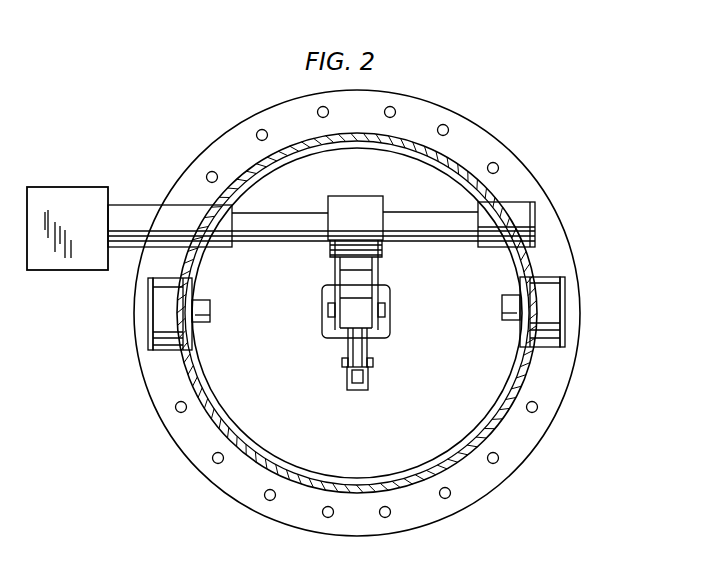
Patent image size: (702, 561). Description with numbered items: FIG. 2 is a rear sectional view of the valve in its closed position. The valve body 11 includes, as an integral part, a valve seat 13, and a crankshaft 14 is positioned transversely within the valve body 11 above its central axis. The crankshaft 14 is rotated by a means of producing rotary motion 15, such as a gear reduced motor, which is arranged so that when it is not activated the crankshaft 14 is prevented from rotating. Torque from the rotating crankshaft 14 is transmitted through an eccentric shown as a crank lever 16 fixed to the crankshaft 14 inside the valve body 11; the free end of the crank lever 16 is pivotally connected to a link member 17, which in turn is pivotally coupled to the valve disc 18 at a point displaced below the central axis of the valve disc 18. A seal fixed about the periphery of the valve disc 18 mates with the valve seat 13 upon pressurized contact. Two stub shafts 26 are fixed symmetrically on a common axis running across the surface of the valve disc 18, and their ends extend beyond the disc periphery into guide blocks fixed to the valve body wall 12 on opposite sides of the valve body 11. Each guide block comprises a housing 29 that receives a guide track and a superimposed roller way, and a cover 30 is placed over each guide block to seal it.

The valve body 11 is at (477, 123).
The valve body wall 12 is at (467, 170).
The valve seat 13 is at (441, 171).
The crankshaft 14 is at (260, 212).
The means of producing rotary motion 15 is at (62, 187).
The crank lever 16 is at (380, 263).
The link member 17 is at (370, 351).
The valve disc 18 is at (423, 426).
The stub shaft 26 is at (210, 310).
The housing 29 is at (155, 352).
The cover 30 is at (148, 318).